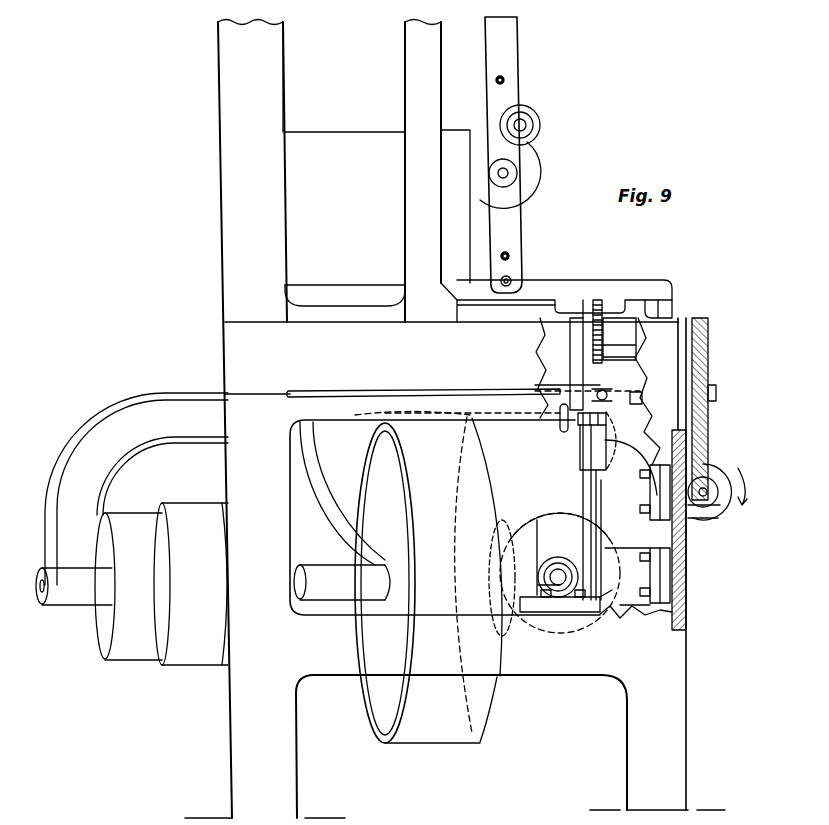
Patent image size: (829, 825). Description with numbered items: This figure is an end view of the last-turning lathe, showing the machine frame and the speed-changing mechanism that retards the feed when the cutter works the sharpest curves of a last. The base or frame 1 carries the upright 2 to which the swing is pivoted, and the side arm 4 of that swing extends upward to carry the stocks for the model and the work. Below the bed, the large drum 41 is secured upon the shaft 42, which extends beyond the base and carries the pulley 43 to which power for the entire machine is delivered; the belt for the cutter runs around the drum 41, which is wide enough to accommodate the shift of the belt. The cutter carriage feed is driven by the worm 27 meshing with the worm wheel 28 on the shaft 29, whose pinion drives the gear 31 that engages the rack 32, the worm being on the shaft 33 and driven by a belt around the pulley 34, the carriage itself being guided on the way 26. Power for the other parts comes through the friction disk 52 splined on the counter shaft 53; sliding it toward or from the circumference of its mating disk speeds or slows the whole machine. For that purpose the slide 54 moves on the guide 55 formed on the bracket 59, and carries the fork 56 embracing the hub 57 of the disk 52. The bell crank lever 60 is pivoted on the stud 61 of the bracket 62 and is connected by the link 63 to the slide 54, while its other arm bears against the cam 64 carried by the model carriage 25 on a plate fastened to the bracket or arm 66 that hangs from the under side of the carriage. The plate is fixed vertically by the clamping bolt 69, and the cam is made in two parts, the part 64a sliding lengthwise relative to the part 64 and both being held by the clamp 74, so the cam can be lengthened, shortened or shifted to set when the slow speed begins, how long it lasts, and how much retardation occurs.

The base or frame 1 is at (455, 419).
The upright 2 is at (405, 88).
The side arm 4 is at (500, 62).
The model carriage 25 is at (632, 290).
The way 26 is at (680, 298).
The worm 27 is at (712, 482).
The worm wheel 28 is at (708, 348).
The shaft 29 is at (716, 394).
The gear 31 is at (614, 331).
The rack 32 is at (596, 300).
The shaft 33 is at (708, 497).
The pulley 34 is at (704, 520).
The drum 41 is at (428, 578).
The shaft 42 is at (298, 582).
The pulley 43 is at (132, 529).
The friction disk 52 is at (550, 535).
The counter shaft 53 is at (566, 612).
The slide 54 is at (607, 535).
The guide 55 is at (616, 558).
The fork 56 is at (562, 557).
The hub 57 is at (548, 565).
The bracket 59 is at (642, 614).
The bell crank lever 60 is at (585, 484).
The stud 61 is at (578, 440).
The bracket 62 is at (637, 466).
The link 63 is at (604, 614).
The cam 64 is at (575, 425).
The cam part 64a is at (642, 400).
The bracket or arm 66 is at (570, 328).
The clamping bolt 69 is at (607, 381).
The clamp 74 is at (558, 430).